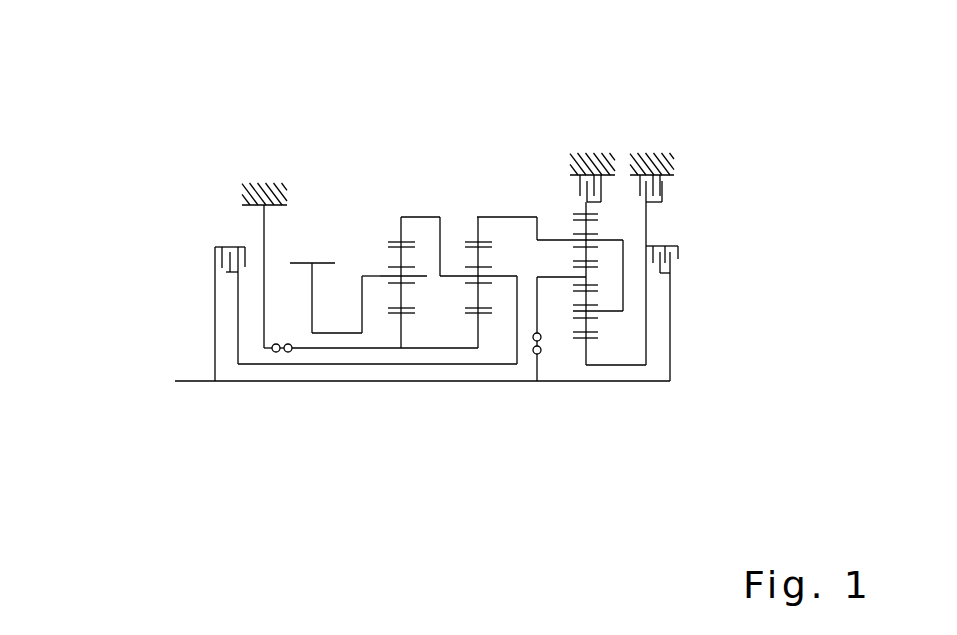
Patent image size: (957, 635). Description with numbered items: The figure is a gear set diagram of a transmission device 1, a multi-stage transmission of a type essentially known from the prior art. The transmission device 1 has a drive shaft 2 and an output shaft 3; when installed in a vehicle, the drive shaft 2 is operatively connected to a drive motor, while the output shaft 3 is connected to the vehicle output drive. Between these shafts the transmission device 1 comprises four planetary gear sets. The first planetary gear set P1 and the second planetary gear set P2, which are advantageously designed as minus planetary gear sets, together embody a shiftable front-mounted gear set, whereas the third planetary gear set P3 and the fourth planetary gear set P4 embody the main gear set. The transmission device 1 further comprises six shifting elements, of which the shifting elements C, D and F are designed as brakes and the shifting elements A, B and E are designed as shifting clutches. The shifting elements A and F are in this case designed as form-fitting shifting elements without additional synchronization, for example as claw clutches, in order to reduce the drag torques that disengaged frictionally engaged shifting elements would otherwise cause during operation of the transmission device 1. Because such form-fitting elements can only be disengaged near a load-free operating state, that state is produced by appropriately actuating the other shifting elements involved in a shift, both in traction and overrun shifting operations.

The transmission device 1 is at (216, 134).
The drive shaft 2 is at (188, 381).
The output shaft 3 is at (313, 307).
The shifting element A is at (532, 342).
The shifting element B is at (680, 260).
The shifting element C is at (665, 187).
The shifting element D is at (603, 193).
The shifting element E is at (221, 254).
The shifting element F is at (283, 353).
The first planetary gear set P1 is at (608, 330).
The second planetary gear set P2 is at (567, 216).
The third planetary gear set P3 is at (460, 246).
The fourth planetary gear set P4 is at (423, 300).